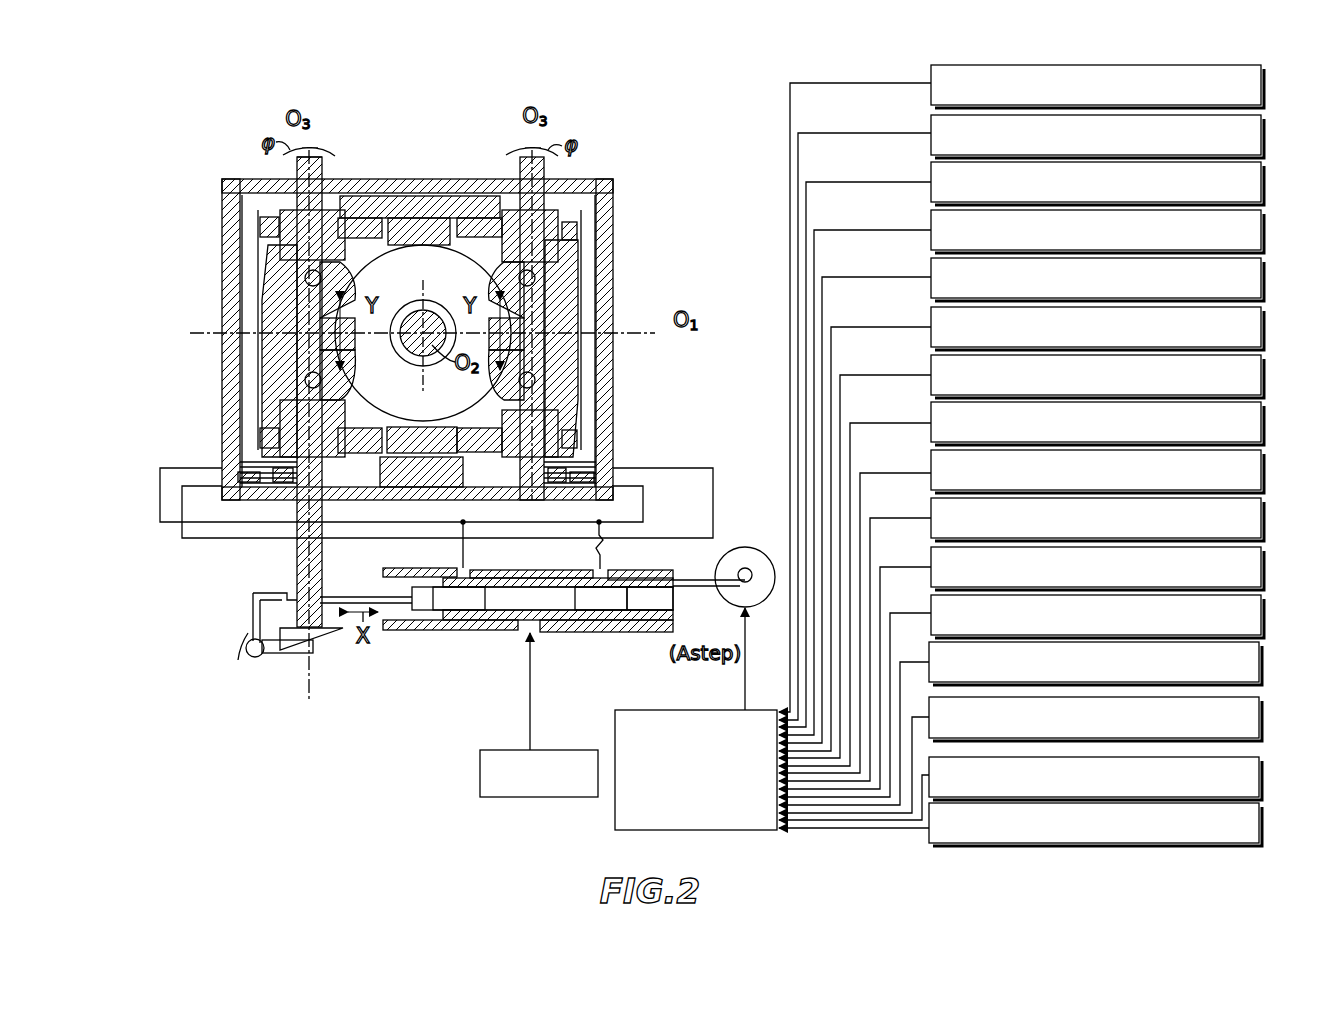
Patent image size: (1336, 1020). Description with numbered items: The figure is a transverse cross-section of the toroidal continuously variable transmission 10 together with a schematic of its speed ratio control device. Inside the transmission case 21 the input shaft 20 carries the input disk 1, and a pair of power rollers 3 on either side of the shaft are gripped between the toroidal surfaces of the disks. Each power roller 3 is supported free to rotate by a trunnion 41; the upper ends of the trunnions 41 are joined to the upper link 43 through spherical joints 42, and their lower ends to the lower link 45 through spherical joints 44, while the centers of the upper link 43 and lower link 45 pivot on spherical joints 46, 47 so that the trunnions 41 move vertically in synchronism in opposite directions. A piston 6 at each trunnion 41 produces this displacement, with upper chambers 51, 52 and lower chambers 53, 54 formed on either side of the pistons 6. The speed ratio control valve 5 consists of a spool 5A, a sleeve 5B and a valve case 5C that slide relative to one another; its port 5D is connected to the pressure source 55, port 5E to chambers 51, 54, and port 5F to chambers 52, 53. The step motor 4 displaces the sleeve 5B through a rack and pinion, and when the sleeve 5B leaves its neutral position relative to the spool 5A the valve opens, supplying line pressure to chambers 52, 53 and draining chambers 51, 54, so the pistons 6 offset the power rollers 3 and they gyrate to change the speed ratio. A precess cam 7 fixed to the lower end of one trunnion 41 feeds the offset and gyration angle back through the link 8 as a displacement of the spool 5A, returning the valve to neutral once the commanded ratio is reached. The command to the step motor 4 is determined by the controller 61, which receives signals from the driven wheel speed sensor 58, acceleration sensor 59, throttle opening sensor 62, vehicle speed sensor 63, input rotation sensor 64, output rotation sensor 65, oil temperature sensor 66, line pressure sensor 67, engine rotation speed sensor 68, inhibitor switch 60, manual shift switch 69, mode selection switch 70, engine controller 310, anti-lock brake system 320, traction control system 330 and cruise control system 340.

The toroidal continuously variable transmission 10 is at (628, 186).
The transmission case 21 is at (612, 238).
The spherical joint 42 is at (325, 215).
The trunnion 41 is at (262, 278).
The power roller 3 is at (352, 283).
The input disk 1 is at (388, 210).
The spherical joint 46 is at (430, 200).
The spherical joint 44 is at (352, 430).
The spherical joint 47 is at (430, 437).
The input shaft 20 is at (422, 300).
The upper link 43 is at (574, 222).
The lower link 45 is at (577, 438).
The upper chamber 51 is at (265, 465).
The upper chamber 52 is at (590, 468).
The lower chamber 53 is at (262, 482).
The lower chamber 54 is at (590, 490).
The piston 6 is at (286, 482).
The speed ratio control valve 5 is at (532, 614).
The spool 5A is at (560, 630).
The sleeve 5B is at (650, 630).
The valve case 5C is at (642, 568).
The port 5D is at (525, 630).
The port 5E is at (598, 568).
The port 5F is at (460, 568).
The step motor 4 is at (745, 547).
The precess cam 7 is at (325, 640).
The link 8 is at (252, 658).
The pressure source 55 is at (541, 797).
The controller 61 is at (735, 815).
The driven wheel speed sensor 58 is at (1266, 86).
The acceleration sensor 59 is at (1266, 136).
The throttle opening sensor 62 is at (1266, 183).
The vehicle speed sensor 63 is at (1266, 231).
The input rotation sensor 64 is at (1266, 279).
The output rotation sensor 65 is at (1266, 328).
The oil temperature sensor 66 is at (1266, 376).
The line pressure sensor 67 is at (1266, 423).
The engine rotation speed sensor 68 is at (1266, 471).
The inhibitor switch 60 is at (1266, 519).
The manual shift switch 69 is at (1266, 568).
The mode selection switch 70 is at (1266, 616).
The engine controller 310 is at (1264, 663).
The anti-lock brake system 320 is at (1264, 713).
The traction control system 330 is at (1264, 764).
The cruise control system 340 is at (1264, 812).